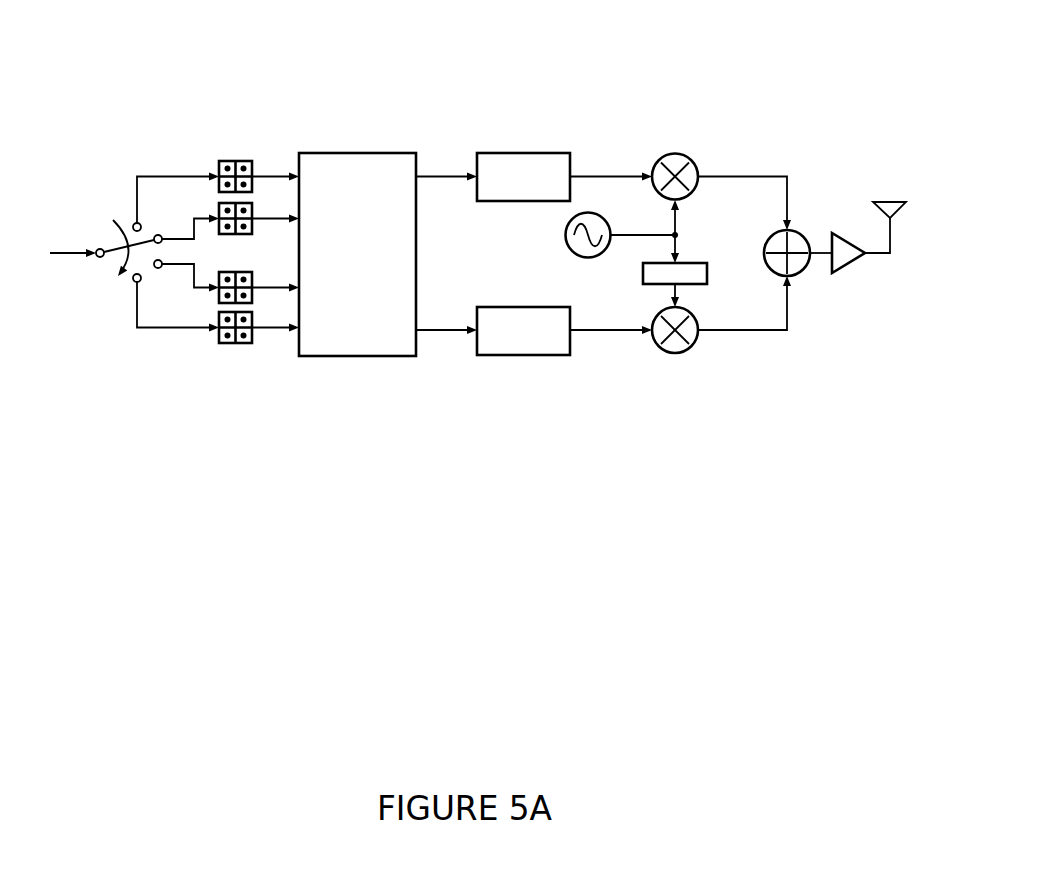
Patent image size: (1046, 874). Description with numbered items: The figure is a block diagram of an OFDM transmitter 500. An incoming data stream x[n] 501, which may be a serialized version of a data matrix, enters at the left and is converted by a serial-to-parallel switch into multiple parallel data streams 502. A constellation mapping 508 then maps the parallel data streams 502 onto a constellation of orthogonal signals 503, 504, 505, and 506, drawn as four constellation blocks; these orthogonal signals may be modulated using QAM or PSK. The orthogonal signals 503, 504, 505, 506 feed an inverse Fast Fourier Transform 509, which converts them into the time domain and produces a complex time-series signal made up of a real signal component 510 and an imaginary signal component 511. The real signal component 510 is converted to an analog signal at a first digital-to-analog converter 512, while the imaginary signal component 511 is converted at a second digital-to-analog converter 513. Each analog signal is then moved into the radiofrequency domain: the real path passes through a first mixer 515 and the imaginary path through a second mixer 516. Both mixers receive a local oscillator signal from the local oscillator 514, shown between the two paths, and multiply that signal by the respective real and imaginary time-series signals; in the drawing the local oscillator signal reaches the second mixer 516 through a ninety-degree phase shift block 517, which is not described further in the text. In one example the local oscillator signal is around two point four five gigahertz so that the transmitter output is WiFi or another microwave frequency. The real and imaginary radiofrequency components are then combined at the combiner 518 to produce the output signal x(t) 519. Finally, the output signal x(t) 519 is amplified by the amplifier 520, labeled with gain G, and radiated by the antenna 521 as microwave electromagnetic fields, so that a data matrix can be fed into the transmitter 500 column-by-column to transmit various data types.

The OFDM transmitter 500 is at (125, 81).
The incoming data stream x[n] 501 is at (48, 258).
The parallel data streams 502 is at (107, 303).
The orthogonal signal 503 is at (272, 192).
The orthogonal signal 504 is at (272, 234).
The orthogonal signal 505 is at (272, 300).
The orthogonal signal 506 is at (272, 342).
The constellation mapping 508 is at (247, 371).
The inverse Fast Fourier Transform 509 is at (368, 251).
The real signal component 510 is at (454, 153).
The imaginary signal component 511 is at (456, 353).
The first digital-to-analog converter 512 is at (519, 183).
The second digital-to-analog converter 513 is at (519, 337).
The local oscillator 514 is at (540, 243).
The first mixer 515 is at (686, 148).
The second mixer 516 is at (686, 373).
The 90 degree phase shifter 517 is at (670, 280).
The combiner 518 is at (768, 235).
The output signal x(t) 519 is at (828, 216).
The amplifier 520 is at (867, 240).
The antenna 521 is at (901, 196).